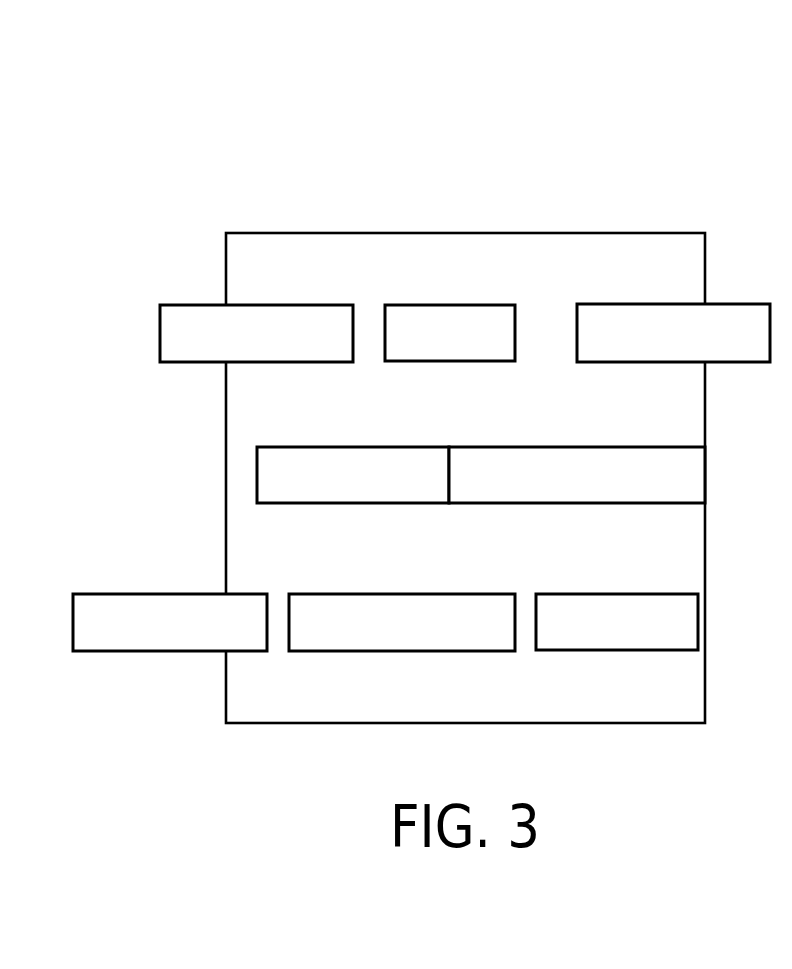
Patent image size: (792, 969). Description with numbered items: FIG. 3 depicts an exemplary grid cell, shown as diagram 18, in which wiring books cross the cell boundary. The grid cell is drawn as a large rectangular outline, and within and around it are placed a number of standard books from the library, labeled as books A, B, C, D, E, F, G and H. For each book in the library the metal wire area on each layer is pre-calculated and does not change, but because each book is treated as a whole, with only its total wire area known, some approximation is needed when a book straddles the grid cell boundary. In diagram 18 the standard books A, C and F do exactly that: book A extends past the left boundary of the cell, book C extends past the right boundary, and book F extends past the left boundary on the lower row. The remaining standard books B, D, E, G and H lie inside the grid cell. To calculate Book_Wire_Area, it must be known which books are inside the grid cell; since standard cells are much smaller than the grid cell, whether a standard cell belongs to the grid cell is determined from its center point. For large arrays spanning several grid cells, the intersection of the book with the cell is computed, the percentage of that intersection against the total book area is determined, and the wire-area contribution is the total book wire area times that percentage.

The diagram 18 is at (483, 200).
The standard book A is at (256, 333).
The standard book B is at (450, 333).
The standard book C is at (673, 333).
The standard book D is at (353, 475).
The standard book E is at (577, 475).
The standard book F is at (170, 622).
The standard book G is at (402, 622).
The standard book H is at (617, 622).